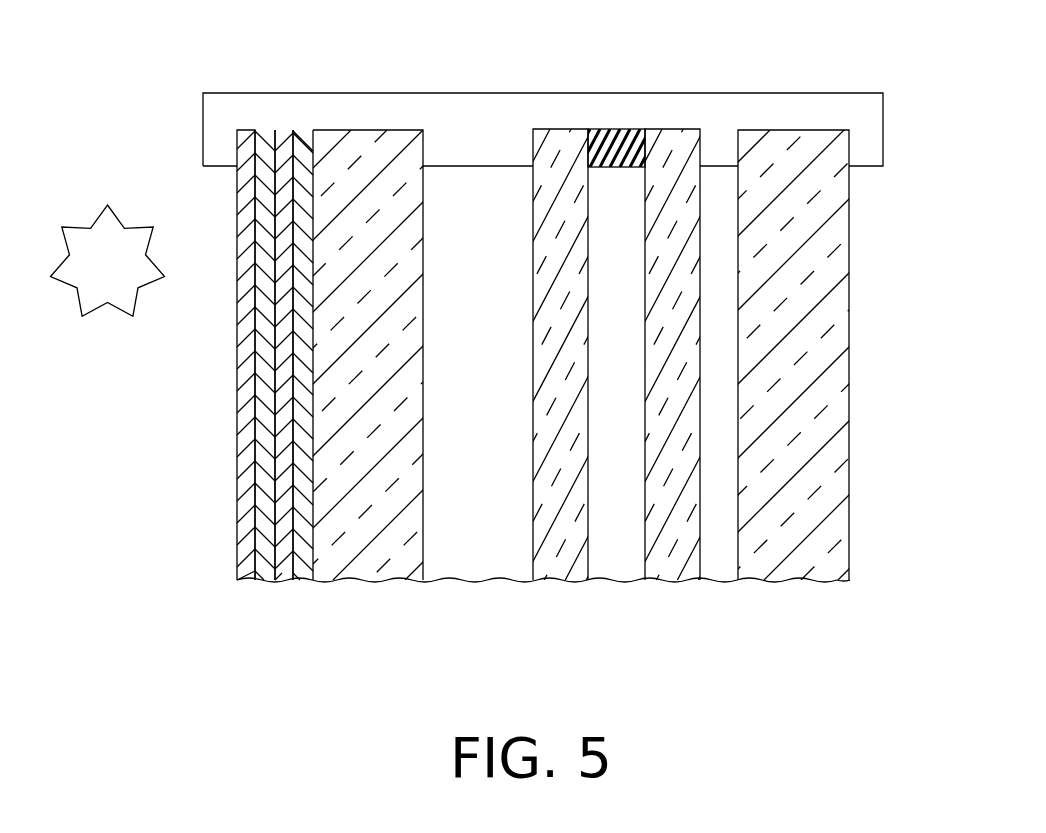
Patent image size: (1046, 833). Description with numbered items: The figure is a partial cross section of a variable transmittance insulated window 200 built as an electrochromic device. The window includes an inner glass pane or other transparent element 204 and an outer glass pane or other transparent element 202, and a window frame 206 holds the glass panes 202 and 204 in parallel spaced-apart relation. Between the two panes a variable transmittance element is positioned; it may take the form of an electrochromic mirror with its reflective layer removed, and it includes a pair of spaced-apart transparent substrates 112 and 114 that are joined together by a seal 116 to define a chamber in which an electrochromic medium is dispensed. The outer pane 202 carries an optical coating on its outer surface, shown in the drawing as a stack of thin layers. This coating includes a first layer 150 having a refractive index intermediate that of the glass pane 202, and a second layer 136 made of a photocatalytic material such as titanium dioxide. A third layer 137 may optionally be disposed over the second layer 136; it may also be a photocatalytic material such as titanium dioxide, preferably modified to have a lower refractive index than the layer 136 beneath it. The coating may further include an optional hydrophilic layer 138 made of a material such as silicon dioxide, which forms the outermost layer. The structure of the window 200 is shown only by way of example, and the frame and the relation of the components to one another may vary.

The variable transmittance window 200 is at (562, 33).
The window frame 206 is at (718, 98).
The outer glass pane 202 is at (330, 573).
The first layer 150 is at (300, 573).
The second layer 136 is at (283, 573).
The third layer 137 is at (260, 404).
The hydrophilic layer 138 is at (240, 512).
The transparent substrate 112 is at (580, 572).
The transparent substrate 114 is at (668, 575).
The seal 116 is at (597, 133).
The inner glass pane 204 is at (840, 342).